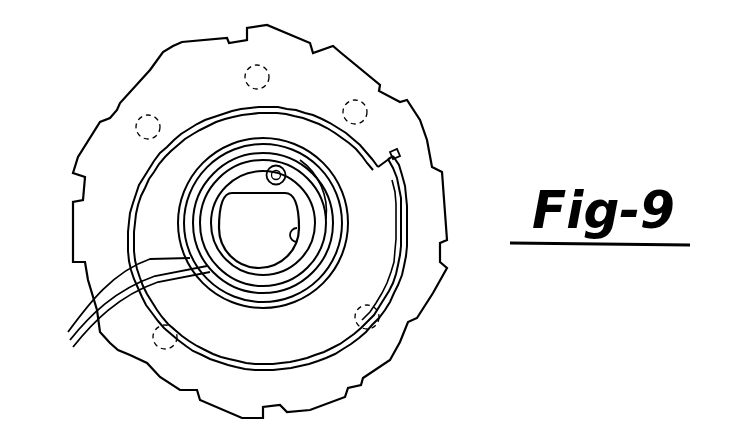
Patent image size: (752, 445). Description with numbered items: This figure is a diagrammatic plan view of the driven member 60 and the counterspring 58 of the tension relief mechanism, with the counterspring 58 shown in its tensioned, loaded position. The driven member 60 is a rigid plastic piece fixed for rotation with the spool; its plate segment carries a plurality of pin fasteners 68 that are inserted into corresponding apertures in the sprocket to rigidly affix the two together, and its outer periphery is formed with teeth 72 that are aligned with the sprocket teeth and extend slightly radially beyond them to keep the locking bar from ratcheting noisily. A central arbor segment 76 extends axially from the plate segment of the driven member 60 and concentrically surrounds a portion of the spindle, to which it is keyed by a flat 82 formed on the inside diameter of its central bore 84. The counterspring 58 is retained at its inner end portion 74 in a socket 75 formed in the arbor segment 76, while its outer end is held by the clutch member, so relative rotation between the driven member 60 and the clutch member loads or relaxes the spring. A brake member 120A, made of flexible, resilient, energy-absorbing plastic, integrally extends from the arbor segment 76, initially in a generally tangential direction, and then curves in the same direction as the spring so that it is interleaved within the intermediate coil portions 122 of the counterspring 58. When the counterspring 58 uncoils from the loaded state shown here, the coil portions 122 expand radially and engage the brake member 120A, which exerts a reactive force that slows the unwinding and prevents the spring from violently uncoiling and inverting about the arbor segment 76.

The counterspring 58 is at (408, 205).
The driven member 60 is at (417, 123).
The pin fasteners 68 is at (266, 70).
The teeth 72 is at (437, 272).
The inner end portion 74 is at (285, 167).
The socket 75 is at (303, 197).
The central arbor segment 76 is at (430, 162).
The flat 82 is at (265, 194).
The central bore 84 is at (297, 242).
The brake member 120A is at (214, 171).
The coil portions 122 is at (112, 312).